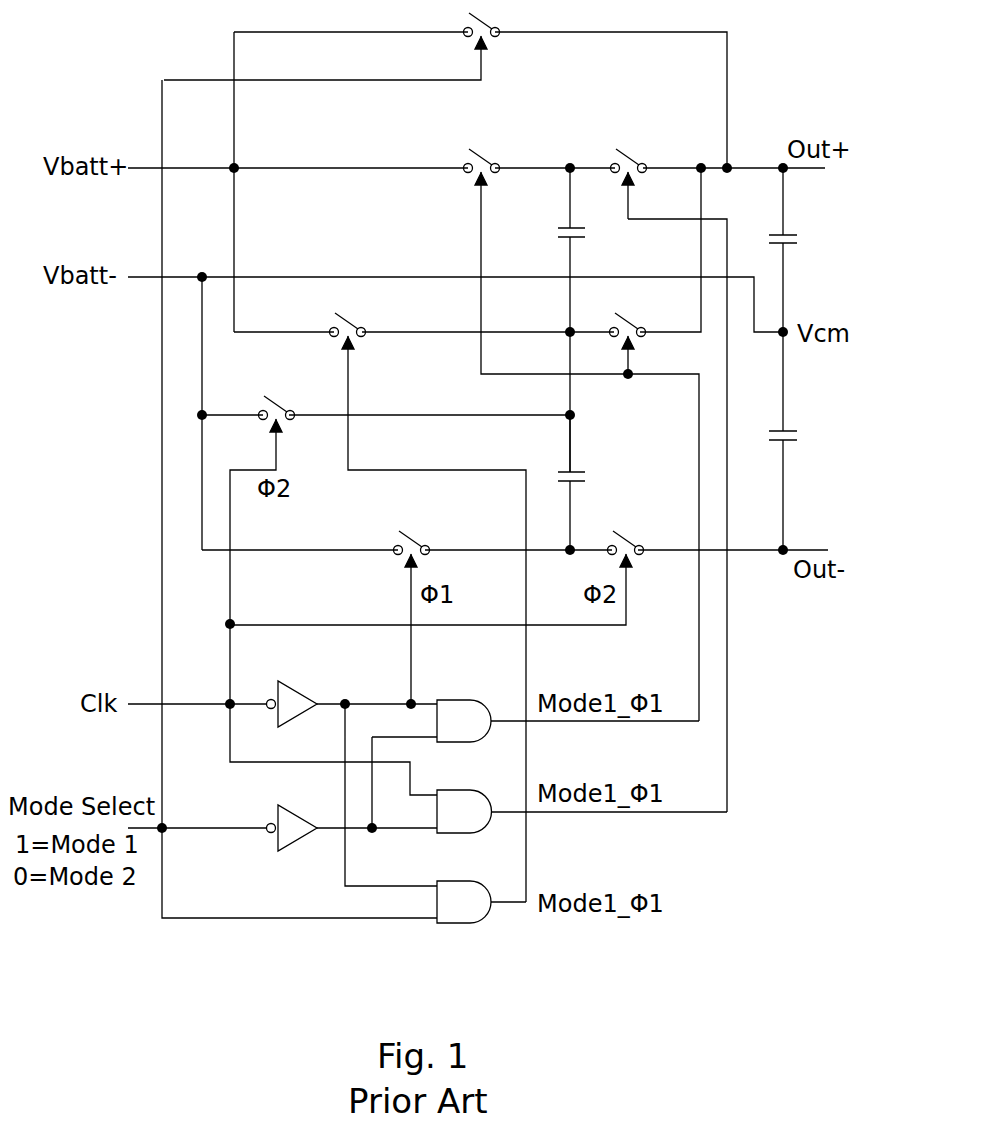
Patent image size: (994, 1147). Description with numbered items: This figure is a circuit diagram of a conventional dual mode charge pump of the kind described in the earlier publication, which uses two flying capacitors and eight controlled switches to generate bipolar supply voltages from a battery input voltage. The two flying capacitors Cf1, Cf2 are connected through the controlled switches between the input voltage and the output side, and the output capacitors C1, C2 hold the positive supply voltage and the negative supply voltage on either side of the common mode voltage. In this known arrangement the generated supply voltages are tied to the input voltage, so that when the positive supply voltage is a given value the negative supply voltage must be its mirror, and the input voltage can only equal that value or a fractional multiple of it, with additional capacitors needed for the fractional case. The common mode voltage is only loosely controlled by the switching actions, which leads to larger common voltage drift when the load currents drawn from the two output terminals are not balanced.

The flying capacitor Cf1 is at (548, 320).
The flying capacitor Cf2 is at (594, 482).
The output capacitor C1 is at (797, 250).
The output capacitor C2 is at (795, 441).